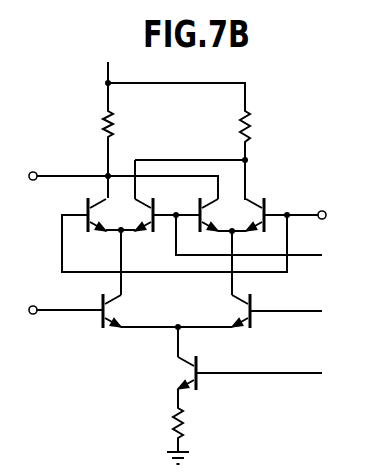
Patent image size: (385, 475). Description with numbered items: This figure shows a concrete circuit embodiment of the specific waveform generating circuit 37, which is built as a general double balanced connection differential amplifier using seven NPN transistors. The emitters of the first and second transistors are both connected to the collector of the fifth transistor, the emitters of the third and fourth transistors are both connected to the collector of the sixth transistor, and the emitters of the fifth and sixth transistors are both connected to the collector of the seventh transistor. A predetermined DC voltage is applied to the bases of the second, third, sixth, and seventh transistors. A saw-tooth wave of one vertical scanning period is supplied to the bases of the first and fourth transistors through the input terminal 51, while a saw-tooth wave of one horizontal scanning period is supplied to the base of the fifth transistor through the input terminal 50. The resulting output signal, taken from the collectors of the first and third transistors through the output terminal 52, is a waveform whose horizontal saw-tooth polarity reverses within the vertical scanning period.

The specific waveform generating circuit 37 is at (292, 96).
The input terminal 50 is at (33, 306).
The input terminal 51 is at (322, 211).
The output terminal 52 is at (33, 172).